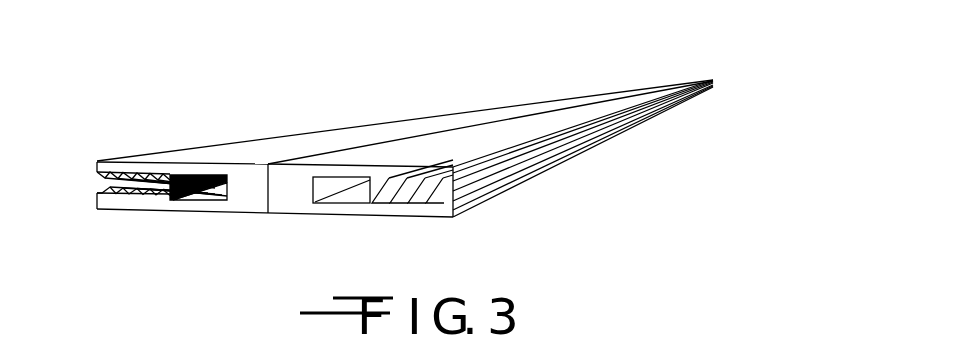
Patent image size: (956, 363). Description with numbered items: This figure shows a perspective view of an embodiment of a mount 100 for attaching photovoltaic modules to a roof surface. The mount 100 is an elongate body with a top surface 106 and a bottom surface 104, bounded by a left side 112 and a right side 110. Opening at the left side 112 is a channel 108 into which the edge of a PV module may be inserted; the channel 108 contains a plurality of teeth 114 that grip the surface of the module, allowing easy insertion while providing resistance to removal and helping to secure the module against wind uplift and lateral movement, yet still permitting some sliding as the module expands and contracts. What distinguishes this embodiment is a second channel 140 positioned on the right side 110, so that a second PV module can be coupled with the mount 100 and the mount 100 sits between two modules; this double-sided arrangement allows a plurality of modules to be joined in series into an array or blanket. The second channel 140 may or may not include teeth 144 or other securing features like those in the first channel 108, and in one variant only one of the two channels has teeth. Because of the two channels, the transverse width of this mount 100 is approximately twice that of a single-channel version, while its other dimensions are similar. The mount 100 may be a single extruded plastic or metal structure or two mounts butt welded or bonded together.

The mount 100 is at (436, 153).
The bottom surface 104 is at (277, 217).
The top surface 106 is at (300, 131).
The channel 108 is at (94, 184).
The right side 110 is at (467, 211).
The left side 112 is at (97, 163).
The teeth 114 is at (198, 200).
The second channel 140 is at (563, 163).
The teeth 144 is at (350, 203).